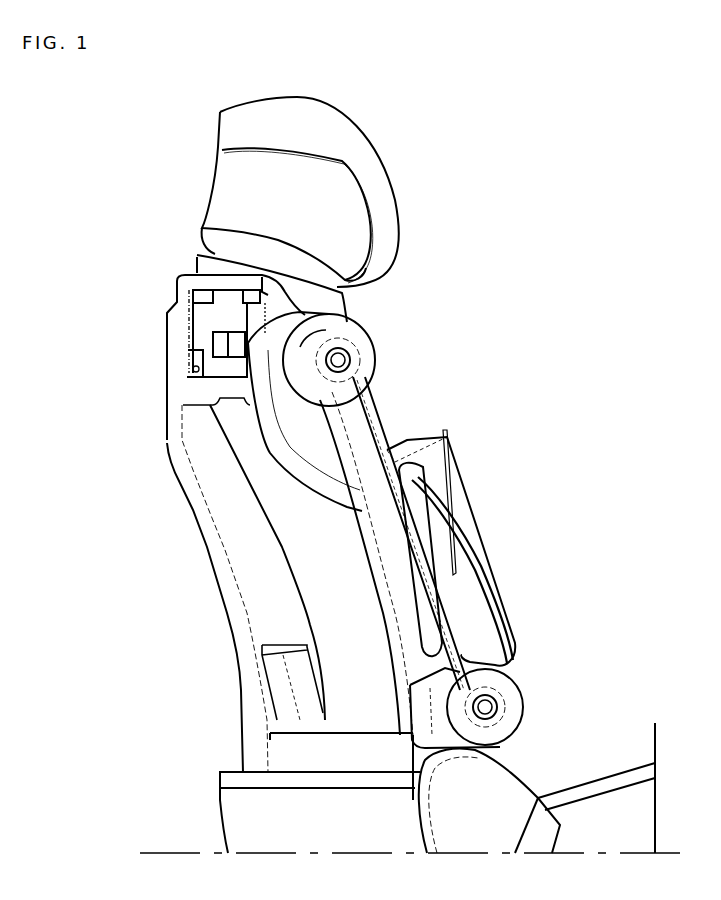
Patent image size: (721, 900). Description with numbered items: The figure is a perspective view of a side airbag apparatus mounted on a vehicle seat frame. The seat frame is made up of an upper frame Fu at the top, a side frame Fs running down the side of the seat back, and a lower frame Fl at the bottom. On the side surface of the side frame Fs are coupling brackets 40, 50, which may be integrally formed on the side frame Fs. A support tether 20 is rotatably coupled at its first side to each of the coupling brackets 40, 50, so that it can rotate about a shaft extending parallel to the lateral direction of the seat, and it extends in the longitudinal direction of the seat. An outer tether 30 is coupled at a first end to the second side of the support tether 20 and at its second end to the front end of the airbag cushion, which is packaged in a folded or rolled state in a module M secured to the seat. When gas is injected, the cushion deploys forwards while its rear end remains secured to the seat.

The coupling bracket 40 is at (367, 357).
The support tether 20 is at (353, 410).
The module M is at (463, 483).
The outer tether 30 is at (465, 513).
The coupling bracket 50 is at (513, 695).
The upper frame Fu is at (193, 395).
The side frame Fs is at (327, 480).
The lower frame Fl is at (285, 751).